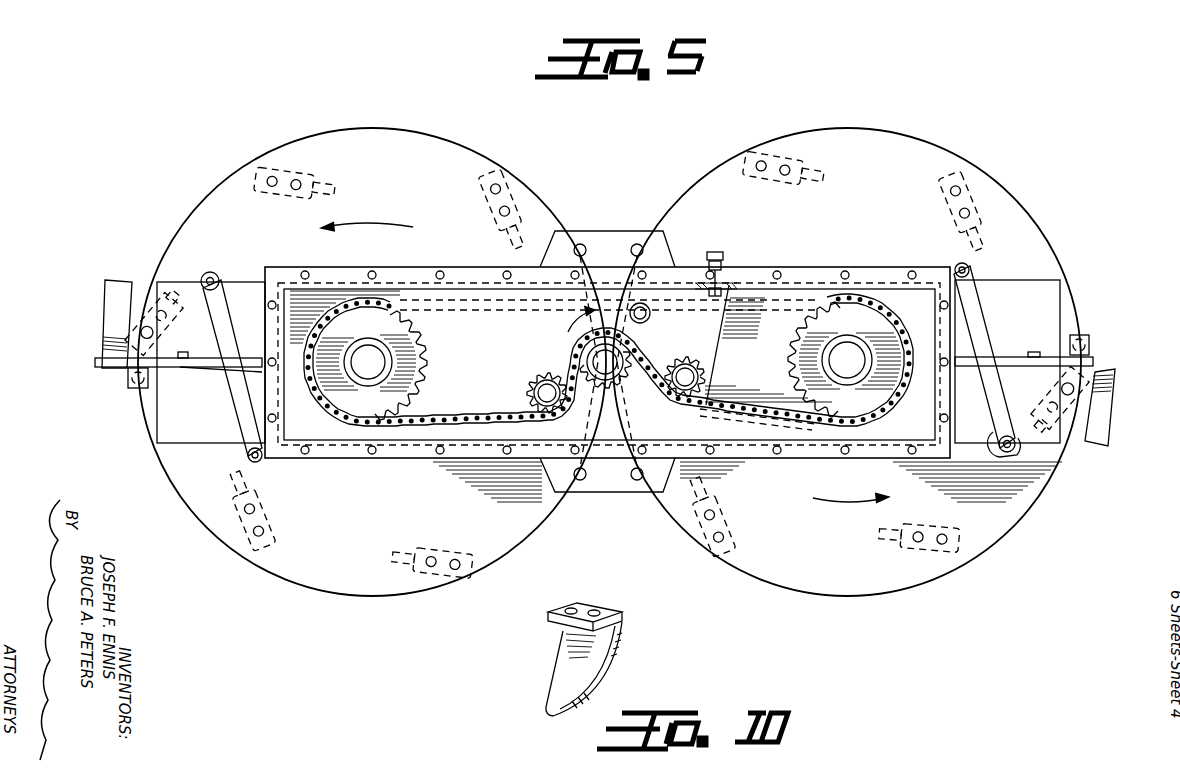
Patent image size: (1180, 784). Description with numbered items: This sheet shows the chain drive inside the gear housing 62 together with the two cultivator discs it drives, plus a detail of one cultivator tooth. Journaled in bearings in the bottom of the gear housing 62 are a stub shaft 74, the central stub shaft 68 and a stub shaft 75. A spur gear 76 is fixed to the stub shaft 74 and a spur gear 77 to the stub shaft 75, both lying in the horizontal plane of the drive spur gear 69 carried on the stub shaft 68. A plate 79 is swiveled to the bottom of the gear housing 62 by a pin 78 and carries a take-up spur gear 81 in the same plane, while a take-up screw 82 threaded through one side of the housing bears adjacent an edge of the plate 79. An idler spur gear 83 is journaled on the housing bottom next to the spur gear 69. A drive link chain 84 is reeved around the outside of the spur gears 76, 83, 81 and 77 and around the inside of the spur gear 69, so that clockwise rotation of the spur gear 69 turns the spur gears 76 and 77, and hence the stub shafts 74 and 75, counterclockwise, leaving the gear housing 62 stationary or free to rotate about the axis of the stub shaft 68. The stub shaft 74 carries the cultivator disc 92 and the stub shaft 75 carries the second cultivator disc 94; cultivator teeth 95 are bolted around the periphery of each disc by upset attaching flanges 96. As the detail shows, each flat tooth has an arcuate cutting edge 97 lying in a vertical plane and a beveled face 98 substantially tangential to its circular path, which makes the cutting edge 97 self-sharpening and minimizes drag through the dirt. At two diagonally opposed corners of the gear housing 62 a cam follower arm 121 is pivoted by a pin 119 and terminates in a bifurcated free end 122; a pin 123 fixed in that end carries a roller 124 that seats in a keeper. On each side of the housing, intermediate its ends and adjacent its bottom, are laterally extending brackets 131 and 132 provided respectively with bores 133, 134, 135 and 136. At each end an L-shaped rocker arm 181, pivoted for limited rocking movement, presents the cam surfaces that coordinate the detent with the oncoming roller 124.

In FIG. 5, the gear housing 62 is at (735, 430).
In FIG. 5, the stub shaft 68 is at (620, 394).
In FIG. 5, the spur gear 69 is at (603, 396).
In FIG. 5, the stub shaft 74 is at (375, 372).
In FIG. 5, the stub shaft 75 is at (847, 370).
In FIG. 5, the spur gear 76 is at (432, 356).
In FIG. 5, the spur gear 77 is at (795, 358).
In FIG. 5, the pin 78 is at (650, 319).
In FIG. 5, the plate 79 is at (720, 340).
In FIG. 5, the take-up spur gear 81 is at (708, 378).
In FIG. 5, the take-up screw 82 is at (717, 252).
In FIG. 5, the idler spur gear 83 is at (533, 380).
In FIG. 5, the drive link chain 84 is at (323, 313).
In FIG. 5, the cultivator disc 92 is at (383, 508).
In FIG. 5, the second cultivator disc 94 is at (872, 223).
In FIG. 5, the cultivator teeth 95 is at (300, 168).
In FIG. 10, the cultivator teeth 95 is at (578, 651).
In FIG. 10, the upset attaching flanges 96 is at (563, 606).
In FIG. 10, the arcuate cutting edge 97 is at (600, 688).
In FIG. 10, the beveled face 98 is at (614, 668).
In FIG. 5, the pin 119 is at (258, 463).
In FIG. 5, the cam follower arm 121 is at (240, 388).
In FIG. 5, the bifurcated free end 122 is at (215, 307).
In FIG. 5, the pin 123 is at (992, 440).
In FIG. 5, the roller 124 is at (202, 275).
In FIG. 5, the bracket 131 is at (614, 232).
In FIG. 5, the bracket 132 is at (604, 498).
In FIG. 5, the bore 133 is at (582, 240).
In FIG. 5, the bore 134 is at (636, 240).
In FIG. 5, the bore 135 is at (580, 482).
In FIG. 5, the bore 136 is at (638, 482).
In FIG. 5, the L-shaped rocker arm 181 is at (108, 372).